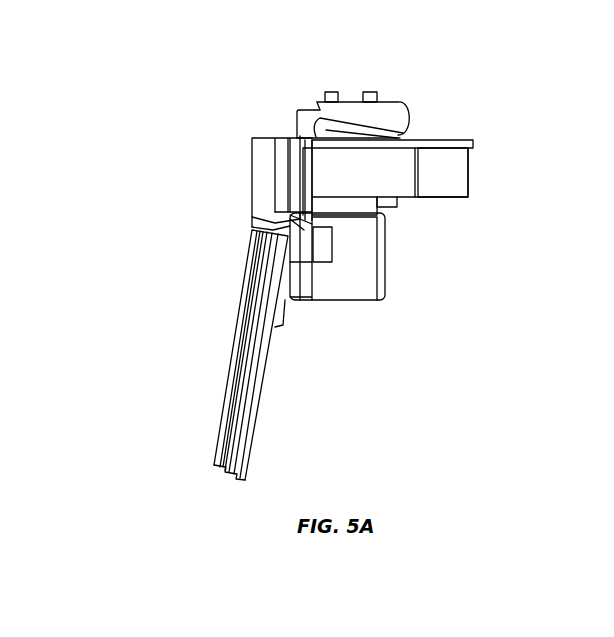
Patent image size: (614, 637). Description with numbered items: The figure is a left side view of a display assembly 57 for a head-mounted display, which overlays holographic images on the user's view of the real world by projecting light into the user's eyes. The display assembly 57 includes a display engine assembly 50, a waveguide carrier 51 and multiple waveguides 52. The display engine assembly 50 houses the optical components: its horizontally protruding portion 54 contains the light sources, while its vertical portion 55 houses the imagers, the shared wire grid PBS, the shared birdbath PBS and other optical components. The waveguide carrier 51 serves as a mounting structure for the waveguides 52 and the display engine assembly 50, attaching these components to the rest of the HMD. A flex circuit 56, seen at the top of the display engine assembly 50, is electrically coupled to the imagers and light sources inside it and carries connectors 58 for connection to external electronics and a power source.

The display engine assembly 50 is at (431, 166).
The waveguide carrier 51 is at (242, 355).
The waveguides 52 is at (230, 395).
The horizontally protruding portion 54 is at (443, 197).
The vertical portion 55 is at (383, 300).
The flex circuit 56 is at (408, 112).
The display assembly 57 is at (447, 84).
The connectors 58 is at (338, 92).